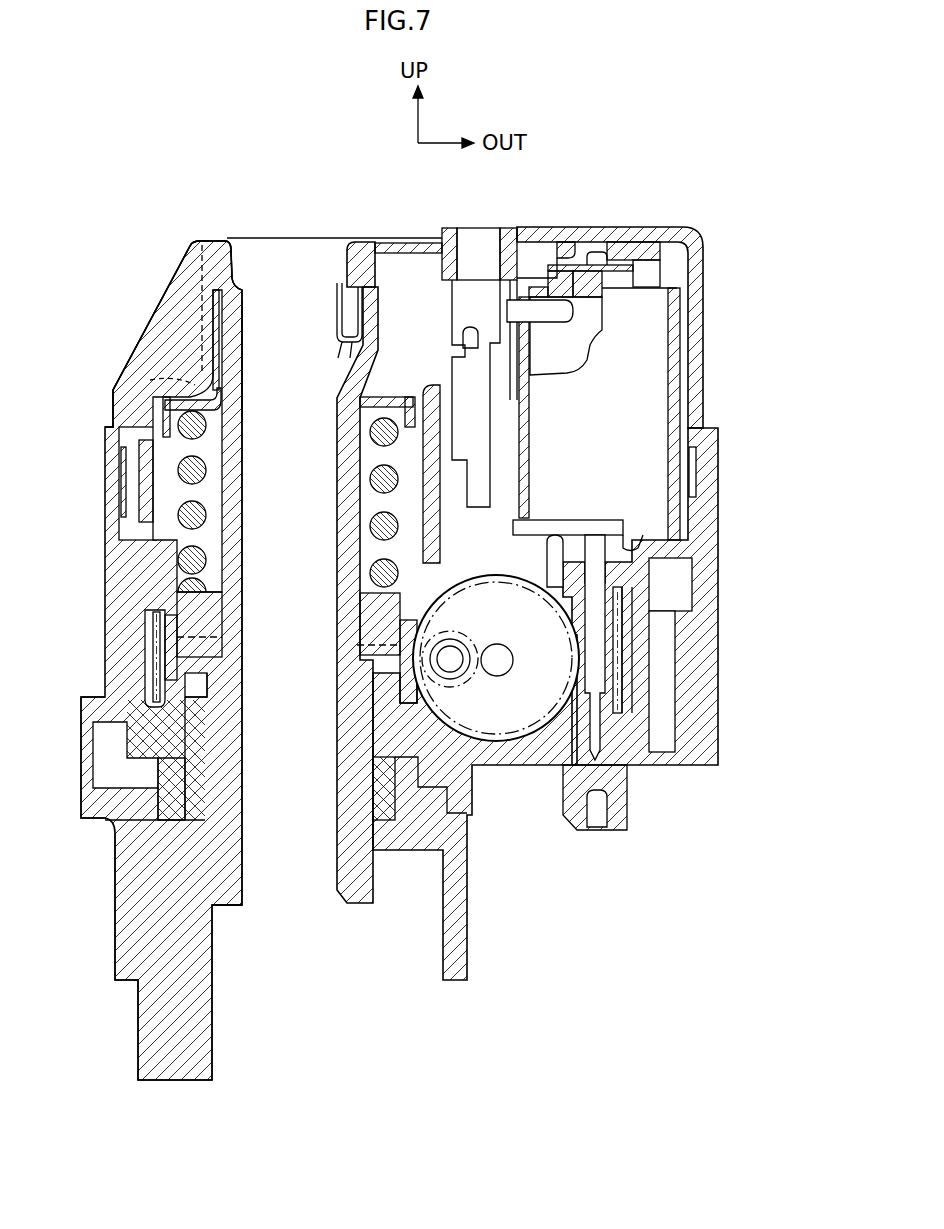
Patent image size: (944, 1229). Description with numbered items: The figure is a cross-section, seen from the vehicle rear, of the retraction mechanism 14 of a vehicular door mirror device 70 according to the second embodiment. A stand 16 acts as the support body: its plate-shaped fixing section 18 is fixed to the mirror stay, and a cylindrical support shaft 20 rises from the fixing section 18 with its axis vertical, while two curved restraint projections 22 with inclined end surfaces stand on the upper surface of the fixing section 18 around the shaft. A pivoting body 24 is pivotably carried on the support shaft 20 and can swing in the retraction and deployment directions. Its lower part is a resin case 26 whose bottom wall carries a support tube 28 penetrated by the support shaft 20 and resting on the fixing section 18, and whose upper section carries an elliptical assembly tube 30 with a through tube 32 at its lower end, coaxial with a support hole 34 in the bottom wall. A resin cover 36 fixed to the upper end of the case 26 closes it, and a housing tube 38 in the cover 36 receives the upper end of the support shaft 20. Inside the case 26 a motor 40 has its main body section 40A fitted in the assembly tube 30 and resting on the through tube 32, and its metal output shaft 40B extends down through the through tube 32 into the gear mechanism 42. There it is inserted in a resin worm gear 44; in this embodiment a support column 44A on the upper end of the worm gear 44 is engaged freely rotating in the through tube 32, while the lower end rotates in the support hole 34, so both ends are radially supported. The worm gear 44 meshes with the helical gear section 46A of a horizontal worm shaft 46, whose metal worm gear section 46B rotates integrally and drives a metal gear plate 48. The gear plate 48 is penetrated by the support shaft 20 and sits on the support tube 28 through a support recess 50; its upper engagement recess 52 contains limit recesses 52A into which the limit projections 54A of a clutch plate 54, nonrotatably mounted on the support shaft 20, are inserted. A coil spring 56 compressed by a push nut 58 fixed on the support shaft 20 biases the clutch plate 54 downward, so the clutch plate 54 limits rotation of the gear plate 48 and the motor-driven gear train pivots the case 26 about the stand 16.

The retraction mechanism 14 is at (181, 180).
The vehicular door mirror device 70 is at (109, 408).
The stand 16 is at (112, 887).
The fixing section 18 is at (470, 843).
The support shaft 20 is at (348, 378).
The restraint projections 22 is at (186, 748).
The pivoting body 24 is at (172, 270).
The case 26 is at (100, 603).
The support tube 28 is at (188, 690).
The assembly tube 30 is at (678, 325).
The through tube 32 is at (548, 548).
The support hole 34 is at (627, 780).
The cover 36 is at (633, 230).
The housing tube 38 is at (142, 494).
The motor 40 is at (673, 372).
The main body section 40A is at (676, 415).
The output shaft 40B is at (614, 545).
The gear mechanism 42 is at (545, 735).
The worm gear 44 is at (625, 665).
The support column 44A is at (640, 572).
The worm shaft 46 is at (482, 752).
The helical gear section 46A is at (510, 742).
The worm gear section 46B is at (462, 646).
The gear plate 48 is at (153, 650).
The support recess 50 is at (186, 728).
The engagement recess 52 is at (163, 624).
The limit recesses 52A is at (198, 652).
The clutch plate 54 is at (177, 598).
The limit projections 54A is at (372, 656).
The coil spring 56 is at (125, 468).
The push nut 58 is at (190, 400).